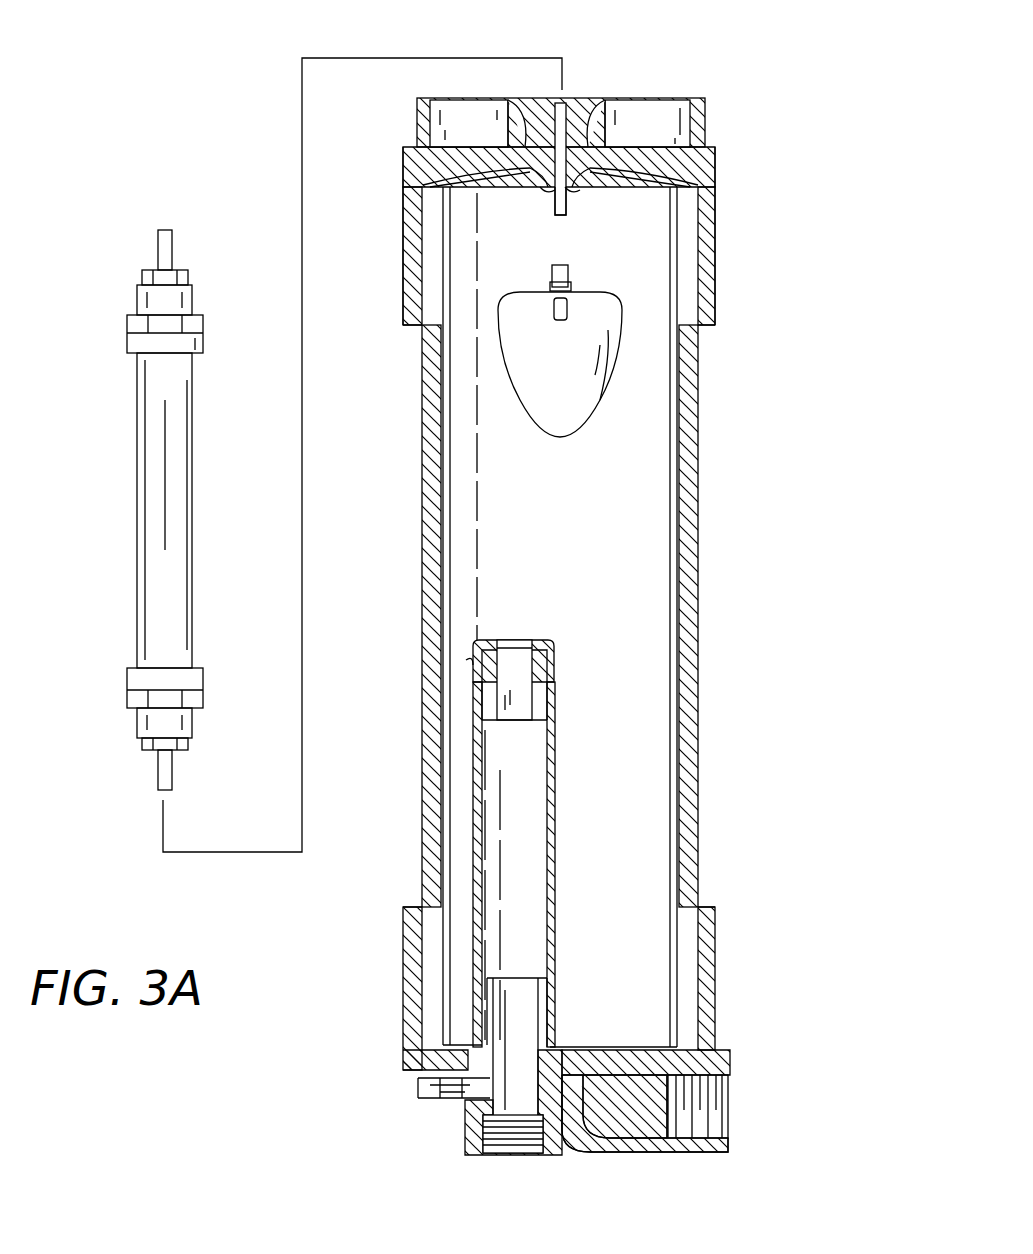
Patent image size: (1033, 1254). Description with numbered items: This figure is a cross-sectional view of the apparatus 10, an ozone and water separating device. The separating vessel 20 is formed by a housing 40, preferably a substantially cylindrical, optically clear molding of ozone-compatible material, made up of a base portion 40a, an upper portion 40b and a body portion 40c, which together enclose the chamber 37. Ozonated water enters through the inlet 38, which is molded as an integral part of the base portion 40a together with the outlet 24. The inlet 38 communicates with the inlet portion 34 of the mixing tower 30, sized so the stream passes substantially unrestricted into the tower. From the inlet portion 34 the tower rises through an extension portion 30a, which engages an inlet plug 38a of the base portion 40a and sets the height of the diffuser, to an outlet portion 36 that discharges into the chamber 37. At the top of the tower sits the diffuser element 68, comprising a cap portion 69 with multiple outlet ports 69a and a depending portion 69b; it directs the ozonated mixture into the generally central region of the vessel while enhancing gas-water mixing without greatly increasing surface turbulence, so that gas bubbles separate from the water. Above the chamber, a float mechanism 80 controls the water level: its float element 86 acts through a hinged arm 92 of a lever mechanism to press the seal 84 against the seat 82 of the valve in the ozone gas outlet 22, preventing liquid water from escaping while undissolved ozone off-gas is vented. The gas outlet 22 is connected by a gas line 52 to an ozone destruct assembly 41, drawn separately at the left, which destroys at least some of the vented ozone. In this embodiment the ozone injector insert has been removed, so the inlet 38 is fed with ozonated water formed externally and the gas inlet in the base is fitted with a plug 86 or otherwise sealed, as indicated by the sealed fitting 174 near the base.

The apparatus 10 is at (824, 342).
The separating vessel 20 is at (705, 560).
The ozone gas outlet 22 is at (568, 100).
The outlet 24 is at (727, 1086).
The mixing tower 30 is at (543, 858).
The extension portion 30a is at (557, 752).
The inlet portion 34 is at (552, 1008).
The outlet portion 36 is at (572, 677).
The chamber 37 is at (606, 522).
The inlet 38 is at (470, 1105).
The inlet plug 38a is at (538, 995).
The housing 40 is at (645, 626).
The base portion 40a is at (712, 996).
The upper portion 40b is at (715, 228).
The body portion 40c is at (700, 612).
The ozone destruct assembly 41 is at (135, 470).
The gas line 52 is at (300, 160).
The diffuser element 68 is at (468, 665).
The cap portion 69 is at (512, 640).
The outlet ports 69a is at (555, 668).
The depending portion 69b is at (488, 718).
The float mechanism 80 is at (630, 292).
The seat 82 is at (590, 183).
The seal 84 is at (563, 205).
The float element 86 is at (577, 412).
The hinged arm 92 is at (568, 278).
The outlet port 174 is at (445, 1097).